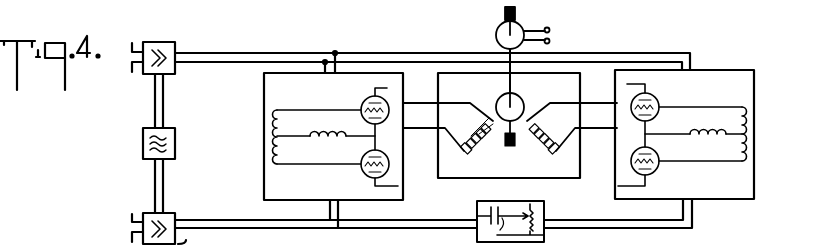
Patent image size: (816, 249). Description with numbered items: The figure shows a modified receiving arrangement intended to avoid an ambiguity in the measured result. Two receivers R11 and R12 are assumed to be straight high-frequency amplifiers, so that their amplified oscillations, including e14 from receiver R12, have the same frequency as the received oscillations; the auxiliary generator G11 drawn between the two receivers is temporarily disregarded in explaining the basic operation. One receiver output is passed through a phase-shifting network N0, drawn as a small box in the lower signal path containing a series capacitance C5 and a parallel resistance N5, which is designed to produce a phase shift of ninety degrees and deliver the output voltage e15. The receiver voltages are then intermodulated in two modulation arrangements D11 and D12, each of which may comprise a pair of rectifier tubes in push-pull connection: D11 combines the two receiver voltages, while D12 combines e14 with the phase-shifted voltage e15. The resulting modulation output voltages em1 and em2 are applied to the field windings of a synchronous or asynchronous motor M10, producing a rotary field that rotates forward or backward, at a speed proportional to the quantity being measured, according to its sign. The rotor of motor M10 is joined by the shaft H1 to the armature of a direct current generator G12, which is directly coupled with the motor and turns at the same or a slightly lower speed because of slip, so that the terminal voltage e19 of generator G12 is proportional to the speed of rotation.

The receiver R11 is at (74, 2).
The receiver R12 is at (176, 42).
The auxiliary generator G11 is at (143, 136).
The modulation arrangement D11 is at (264, 170).
The modulation arrangement D12 is at (715, 70).
The motor M10 is at (457, 73).
The shaft H1 is at (508, 25).
The direct current generator G12 is at (522, 26).
The amplified oscillation e14 is at (217, 47).
The output voltage e15 is at (217, 236).
The terminal voltage e19 is at (557, 45).
The modulation output voltage em1 is at (426, 101).
The modulation output voltage em2 is at (612, 98).
The capacitor network C5 is at (510, 221).
The resistor N5 is at (538, 222).
The phase-shifting network N0 is at (544, 232).